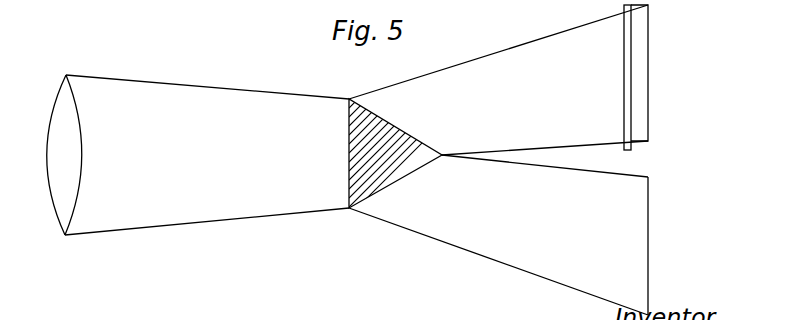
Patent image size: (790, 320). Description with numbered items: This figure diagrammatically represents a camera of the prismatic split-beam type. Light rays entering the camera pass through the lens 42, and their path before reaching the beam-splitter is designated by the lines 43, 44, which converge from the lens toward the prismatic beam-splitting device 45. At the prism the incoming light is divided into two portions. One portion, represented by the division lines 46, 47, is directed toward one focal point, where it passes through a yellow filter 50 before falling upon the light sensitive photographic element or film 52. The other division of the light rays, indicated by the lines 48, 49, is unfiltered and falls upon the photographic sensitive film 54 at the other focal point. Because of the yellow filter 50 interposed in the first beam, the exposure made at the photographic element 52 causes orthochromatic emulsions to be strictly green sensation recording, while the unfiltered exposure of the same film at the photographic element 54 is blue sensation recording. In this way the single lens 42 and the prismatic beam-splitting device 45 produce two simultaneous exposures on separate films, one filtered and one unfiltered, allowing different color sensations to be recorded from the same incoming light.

The lens 42 is at (66, 74).
The light ray line 43 is at (186, 83).
The light ray line 44 is at (187, 225).
The prismatic beam-splitting device 45 is at (349, 98).
The divided ray line 46 is at (466, 62).
The divided ray line 47 is at (533, 148).
The unfiltered ray line 48 is at (525, 164).
The unfiltered ray line 49 is at (443, 243).
The yellow filter 50 is at (623, 58).
The photographic element or film at one focal point 52 is at (651, 58).
The photographic element or film at the other focal point 54 is at (659, 206).